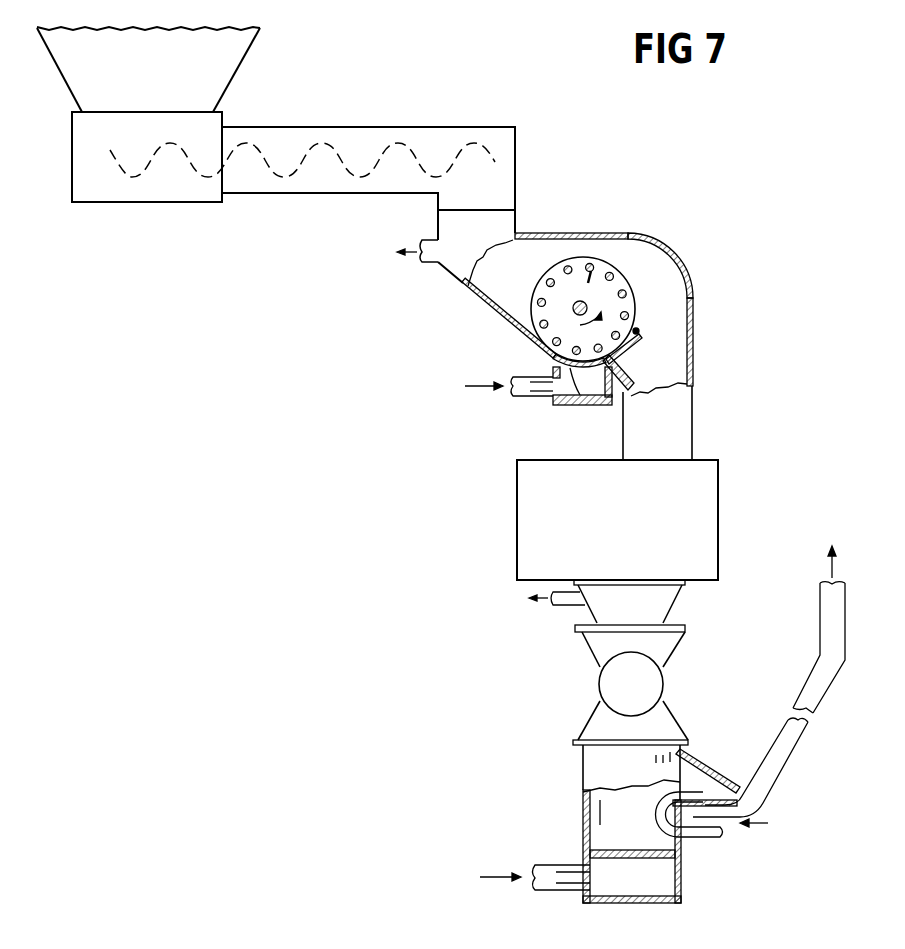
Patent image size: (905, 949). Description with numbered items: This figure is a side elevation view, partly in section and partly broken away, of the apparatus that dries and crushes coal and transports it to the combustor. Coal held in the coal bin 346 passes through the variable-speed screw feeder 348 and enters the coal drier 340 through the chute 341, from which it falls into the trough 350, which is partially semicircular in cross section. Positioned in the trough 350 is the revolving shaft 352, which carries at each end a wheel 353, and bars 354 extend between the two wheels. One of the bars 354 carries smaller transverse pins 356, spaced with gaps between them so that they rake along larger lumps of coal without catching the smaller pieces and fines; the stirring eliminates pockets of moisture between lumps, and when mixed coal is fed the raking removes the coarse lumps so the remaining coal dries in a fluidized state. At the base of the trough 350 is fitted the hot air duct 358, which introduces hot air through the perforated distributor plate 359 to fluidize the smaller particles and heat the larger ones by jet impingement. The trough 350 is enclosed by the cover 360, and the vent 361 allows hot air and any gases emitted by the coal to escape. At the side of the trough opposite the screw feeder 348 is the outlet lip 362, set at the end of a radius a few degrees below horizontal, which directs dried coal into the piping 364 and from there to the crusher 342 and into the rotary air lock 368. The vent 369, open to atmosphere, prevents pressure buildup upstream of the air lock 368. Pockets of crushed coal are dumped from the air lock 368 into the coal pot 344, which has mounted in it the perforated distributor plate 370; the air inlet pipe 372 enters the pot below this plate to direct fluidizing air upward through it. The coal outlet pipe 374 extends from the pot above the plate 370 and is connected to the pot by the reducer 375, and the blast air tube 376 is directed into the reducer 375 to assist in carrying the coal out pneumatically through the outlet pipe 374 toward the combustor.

The coal drier 340 is at (672, 219).
The chute 341 is at (493, 304).
The crusher 342 is at (707, 507).
The coal pot 344 is at (552, 778).
The coal bin 346 is at (235, 71).
The variable-speed screw feeder 348 is at (367, 195).
The trough 350 is at (636, 342).
The revolving shaft 352 is at (573, 304).
The wheel 353 is at (624, 289).
The bars 354 is at (551, 279).
The transverse pins 356 is at (598, 285).
The hot air duct 358 is at (561, 373).
The perforated distributor plate 359 is at (554, 400).
The cover 360 is at (680, 270).
The vent 361 is at (425, 242).
The outlet lip 362 is at (636, 333).
The piping 364 is at (694, 367).
The rotary air lock 368 is at (607, 688).
The vent 369 is at (563, 607).
The perforated distributor plate 370 is at (656, 860).
The air inlet pipe 372 is at (552, 865).
The coal outlet pipe 374 is at (777, 733).
The reducer 375 is at (693, 762).
The blast air tube 376 is at (708, 836).